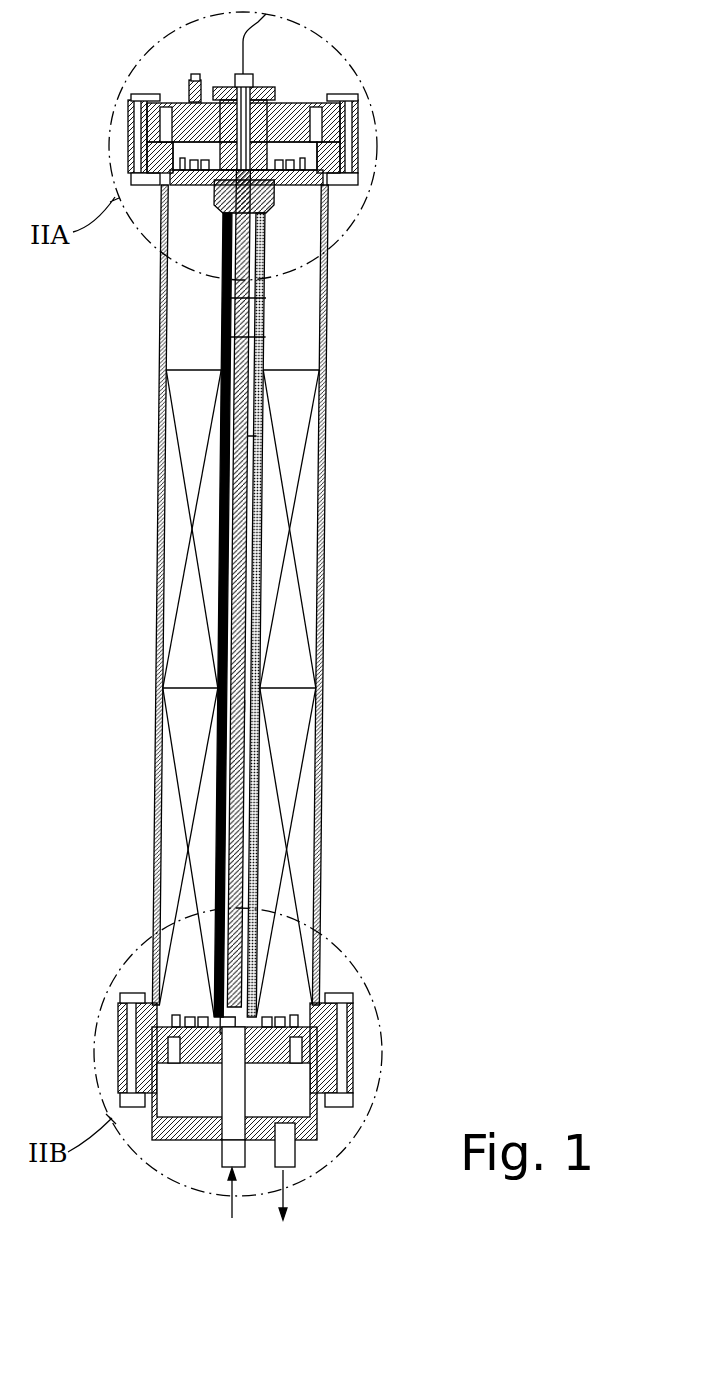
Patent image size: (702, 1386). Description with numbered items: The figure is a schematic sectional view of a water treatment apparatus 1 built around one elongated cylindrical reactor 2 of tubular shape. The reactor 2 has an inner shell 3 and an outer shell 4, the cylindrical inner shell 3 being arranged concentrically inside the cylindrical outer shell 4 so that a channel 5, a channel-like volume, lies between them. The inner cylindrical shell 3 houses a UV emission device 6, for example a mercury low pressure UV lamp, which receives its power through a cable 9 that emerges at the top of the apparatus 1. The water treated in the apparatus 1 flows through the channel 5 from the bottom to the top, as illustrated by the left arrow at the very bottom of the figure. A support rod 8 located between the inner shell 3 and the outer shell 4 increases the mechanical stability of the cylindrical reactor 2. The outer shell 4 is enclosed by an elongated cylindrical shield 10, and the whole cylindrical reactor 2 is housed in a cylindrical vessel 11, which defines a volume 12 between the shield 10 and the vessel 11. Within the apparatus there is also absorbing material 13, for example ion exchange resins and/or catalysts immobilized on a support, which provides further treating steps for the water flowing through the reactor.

The apparatus 1 is at (512, 810).
The cylindrical reactor 2 is at (268, 876).
The inner shell 3 is at (252, 454).
The outer shell 4 is at (264, 356).
The channel 5 is at (264, 318).
The UV emission device 6 is at (242, 649).
The support rod 8 is at (260, 714).
The cable 9 is at (258, 20).
The cylindrical shield 10 is at (224, 799).
The cylindrical vessel 11 is at (164, 598).
The volume 12 is at (176, 476).
The absorbing material 13 is at (196, 529).